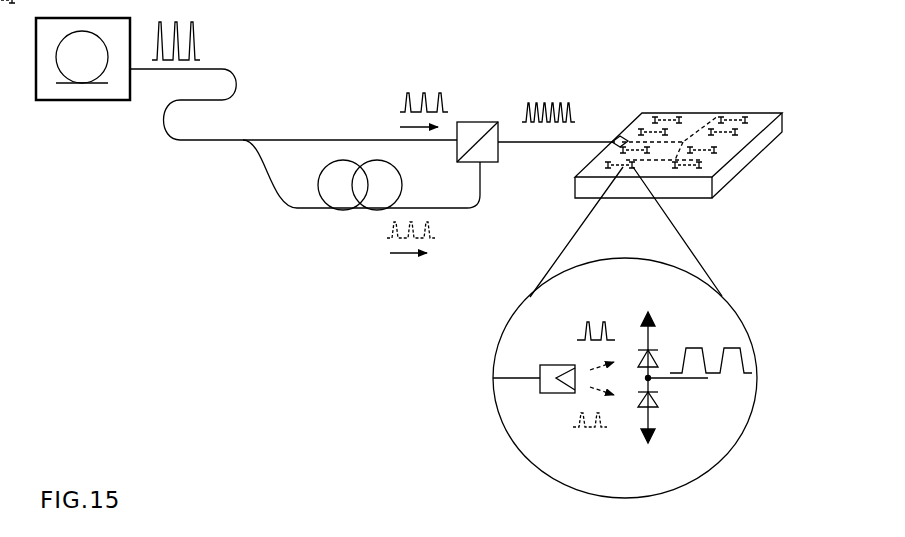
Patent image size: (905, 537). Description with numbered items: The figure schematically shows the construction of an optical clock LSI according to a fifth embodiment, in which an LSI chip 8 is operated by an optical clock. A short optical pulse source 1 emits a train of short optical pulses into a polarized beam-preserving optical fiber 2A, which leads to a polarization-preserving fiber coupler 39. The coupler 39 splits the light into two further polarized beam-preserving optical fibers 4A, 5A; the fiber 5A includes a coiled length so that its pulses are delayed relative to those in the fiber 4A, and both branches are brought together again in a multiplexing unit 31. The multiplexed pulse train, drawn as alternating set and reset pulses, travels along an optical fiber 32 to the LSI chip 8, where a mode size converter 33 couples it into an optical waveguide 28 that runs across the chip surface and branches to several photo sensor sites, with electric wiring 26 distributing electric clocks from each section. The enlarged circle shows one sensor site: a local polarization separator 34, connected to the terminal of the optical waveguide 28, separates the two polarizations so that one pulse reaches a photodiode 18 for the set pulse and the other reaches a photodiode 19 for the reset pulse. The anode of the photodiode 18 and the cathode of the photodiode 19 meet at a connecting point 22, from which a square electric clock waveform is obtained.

The short optical pulse source 1 is at (84, 103).
The polarized beam-preserving optical fiber 2A is at (237, 81).
The polarization-preserving fiber coupler 39 is at (241, 143).
The polarized beam-preserving optical fiber 4A is at (381, 140).
The polarized beam-preserving optical fiber 5A is at (319, 210).
The multiplexing unit 31 is at (495, 164).
The optical fiber 32 is at (584, 141).
The mode size converter 33 is at (623, 140).
The optical waveguide 28 is at (703, 123).
The electric wiring 26 is at (740, 135).
The LSI chip 8 is at (720, 182).
The local polarization separator 34 is at (560, 395).
The photodiode for the set pulse 18 is at (657, 360).
The connecting point 22 is at (652, 381).
The photodiode for the reset pulse 19 is at (657, 406).